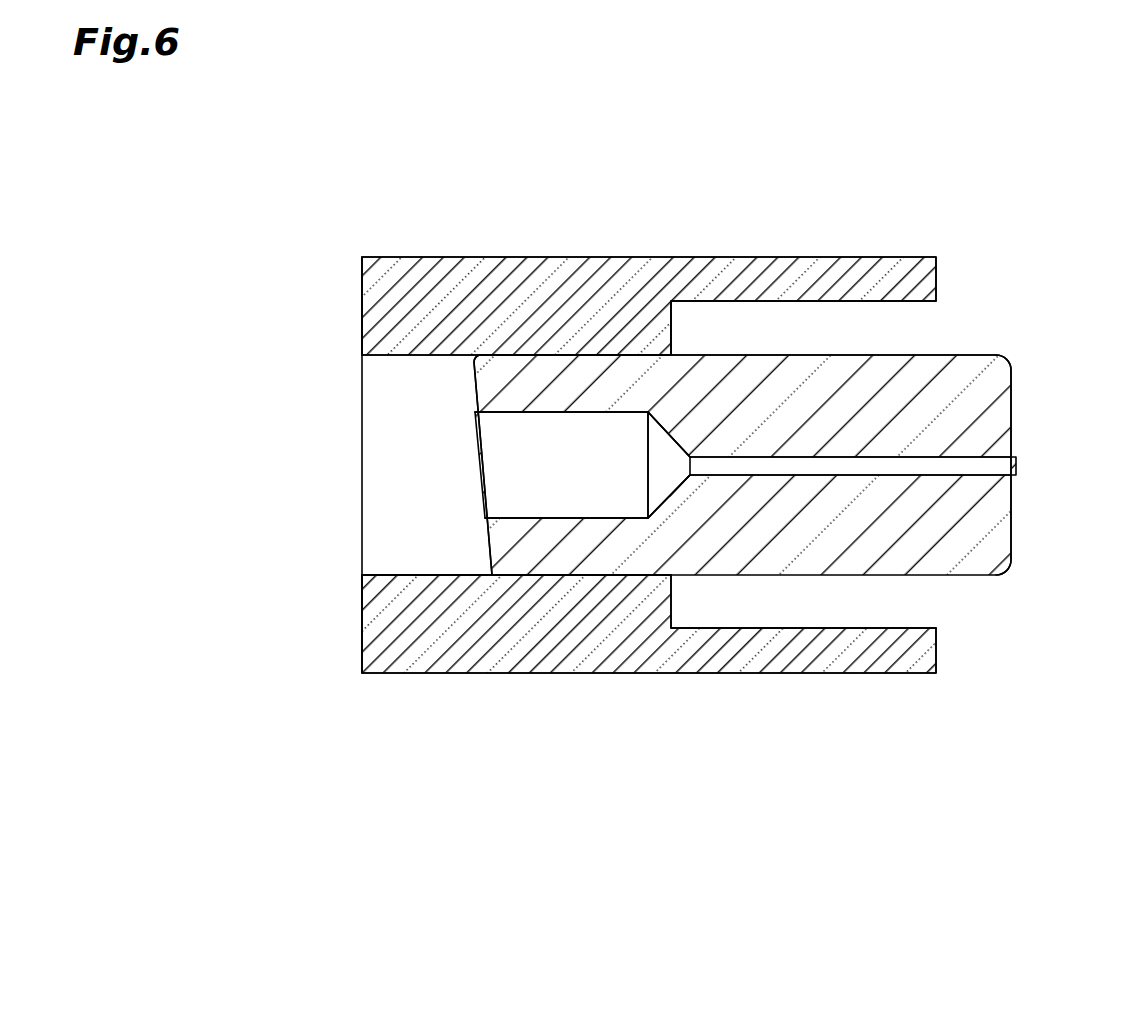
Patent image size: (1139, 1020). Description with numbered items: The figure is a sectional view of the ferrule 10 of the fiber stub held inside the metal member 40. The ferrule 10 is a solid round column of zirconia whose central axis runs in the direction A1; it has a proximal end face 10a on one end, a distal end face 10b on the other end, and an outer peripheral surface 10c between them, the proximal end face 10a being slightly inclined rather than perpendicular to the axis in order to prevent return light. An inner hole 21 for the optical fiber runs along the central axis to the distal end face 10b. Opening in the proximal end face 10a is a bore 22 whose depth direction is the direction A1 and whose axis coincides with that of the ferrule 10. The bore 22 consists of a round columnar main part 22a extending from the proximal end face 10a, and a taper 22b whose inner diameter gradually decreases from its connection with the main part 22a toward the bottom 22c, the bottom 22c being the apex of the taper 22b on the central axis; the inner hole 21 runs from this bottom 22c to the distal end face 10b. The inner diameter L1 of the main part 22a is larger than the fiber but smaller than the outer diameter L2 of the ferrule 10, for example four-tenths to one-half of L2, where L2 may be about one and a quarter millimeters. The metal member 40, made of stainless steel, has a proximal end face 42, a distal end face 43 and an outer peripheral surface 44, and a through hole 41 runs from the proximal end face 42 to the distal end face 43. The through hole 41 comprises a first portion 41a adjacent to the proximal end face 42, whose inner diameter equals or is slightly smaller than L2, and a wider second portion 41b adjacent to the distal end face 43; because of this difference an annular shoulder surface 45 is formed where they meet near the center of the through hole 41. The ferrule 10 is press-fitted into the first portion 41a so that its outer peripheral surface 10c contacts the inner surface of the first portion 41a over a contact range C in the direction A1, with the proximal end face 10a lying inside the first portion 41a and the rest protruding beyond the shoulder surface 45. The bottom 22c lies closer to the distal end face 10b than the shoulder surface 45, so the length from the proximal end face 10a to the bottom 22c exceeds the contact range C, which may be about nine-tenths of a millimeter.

The ferrule 10 is at (977, 352).
The proximal end face 10a is at (477, 398).
The distal end face 10b is at (1015, 396).
The outer peripheral surface 10c is at (567, 355).
The inner hole 21 is at (982, 468).
The bore 22 is at (640, 724).
The main part 22a is at (558, 518).
The taper 22b is at (663, 507).
The bottom 22c is at (670, 476).
The metal member 40 is at (727, 251).
The through hole 41 is at (431, 575).
The first portion 41a is at (406, 575).
The second portion 41b is at (920, 628).
The proximal end face 42 is at (362, 632).
The distal end face 43 is at (938, 272).
The outer peripheral surface 44 is at (728, 673).
The shoulder surface 45 is at (676, 328).
The contact range C is at (671, 301).
The inner diameter of the main part L1 is at (485, 518).
The outer diameter of the ferrule L2 is at (357, 575).
The direction A1 is at (912, 836).